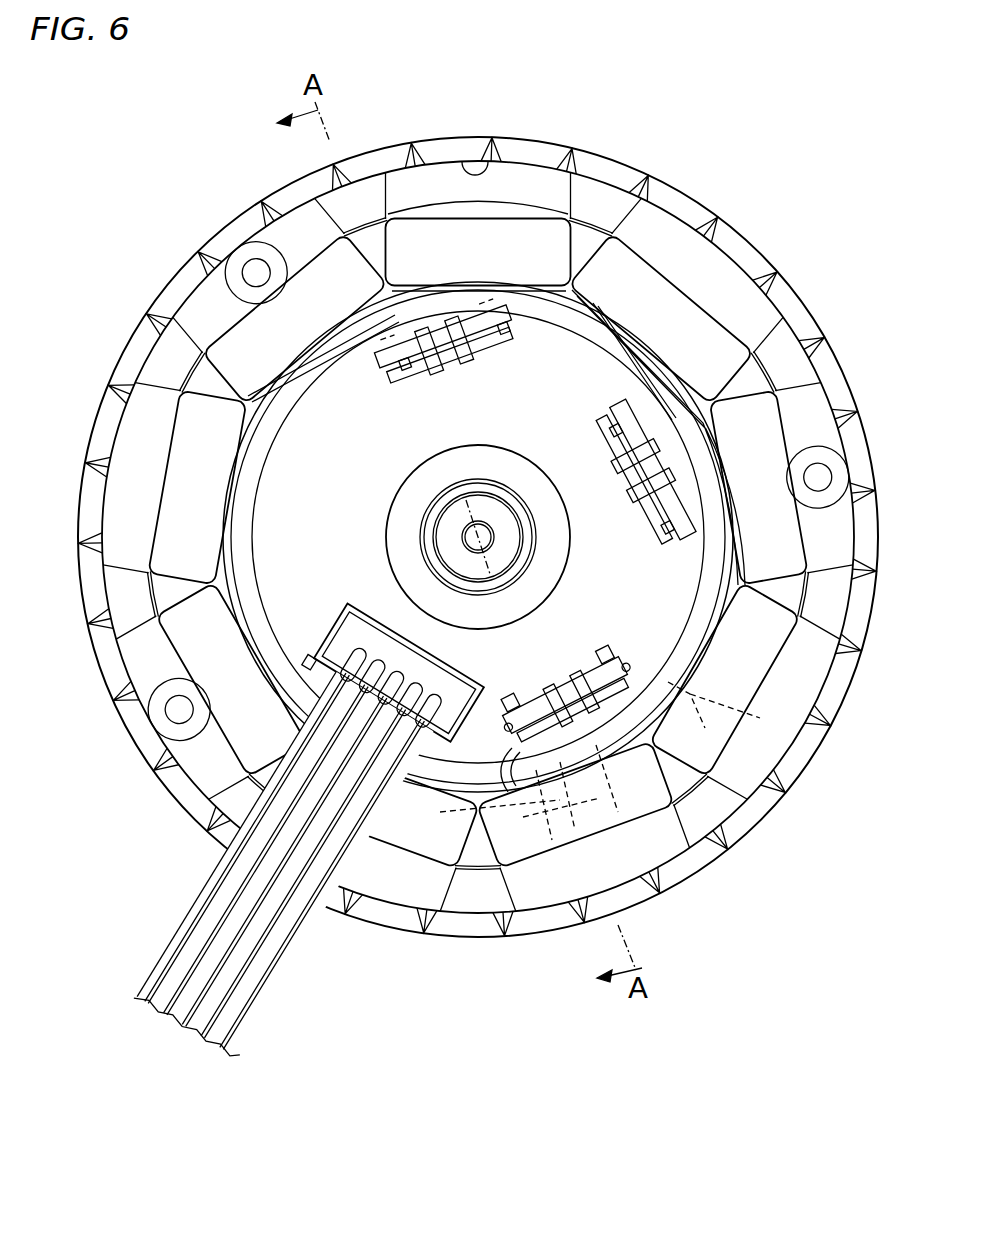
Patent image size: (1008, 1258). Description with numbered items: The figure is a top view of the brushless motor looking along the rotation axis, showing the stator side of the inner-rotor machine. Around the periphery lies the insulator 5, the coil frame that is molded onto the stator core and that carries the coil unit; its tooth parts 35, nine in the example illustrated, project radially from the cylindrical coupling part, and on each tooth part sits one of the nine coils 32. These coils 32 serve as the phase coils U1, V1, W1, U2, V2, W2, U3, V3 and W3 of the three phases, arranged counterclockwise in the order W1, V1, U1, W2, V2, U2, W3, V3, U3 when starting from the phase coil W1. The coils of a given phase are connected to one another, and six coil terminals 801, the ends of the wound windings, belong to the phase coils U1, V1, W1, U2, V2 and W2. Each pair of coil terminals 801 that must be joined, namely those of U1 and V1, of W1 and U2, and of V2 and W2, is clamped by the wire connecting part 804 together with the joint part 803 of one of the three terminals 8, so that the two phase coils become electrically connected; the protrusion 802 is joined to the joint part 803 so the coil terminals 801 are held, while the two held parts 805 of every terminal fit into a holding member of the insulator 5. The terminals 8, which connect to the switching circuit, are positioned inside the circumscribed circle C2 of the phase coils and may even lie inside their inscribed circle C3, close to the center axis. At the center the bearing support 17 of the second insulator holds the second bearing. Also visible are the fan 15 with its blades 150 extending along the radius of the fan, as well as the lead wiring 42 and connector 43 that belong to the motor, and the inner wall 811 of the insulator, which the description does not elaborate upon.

The insulator 5 is at (782, 333).
The fan 15 is at (680, 874).
The blades 150 is at (723, 833).
The insulator inner wall 811 is at (278, 528).
The coils 32 is at (440, 232).
The bearing support 17 is at (492, 505).
The phase coil V1 is at (504, 232).
The phase coil W1 is at (667, 293).
The phase coil U2 is at (753, 540).
The phase coil V2 is at (737, 676).
The phase coil W2 is at (578, 830).
The phase coil U3 is at (399, 828).
The phase coil V3 is at (236, 673).
The phase coil W3 is at (203, 433).
The phase coil U1 is at (273, 347).
The circumscribed circle C2 is at (388, 248).
The inscribed circle C3 is at (467, 290).
The terminals 8 is at (440, 357).
The protrusion 802 is at (567, 690).
The held parts 805 is at (607, 666).
The coil terminals 801 is at (507, 764).
The joint part 803 is at (580, 720).
The wire connecting part 804 is at (597, 748).
The tooth parts 35 is at (698, 706).
The lead wire 42 is at (198, 905).
The connector 43 is at (364, 630).